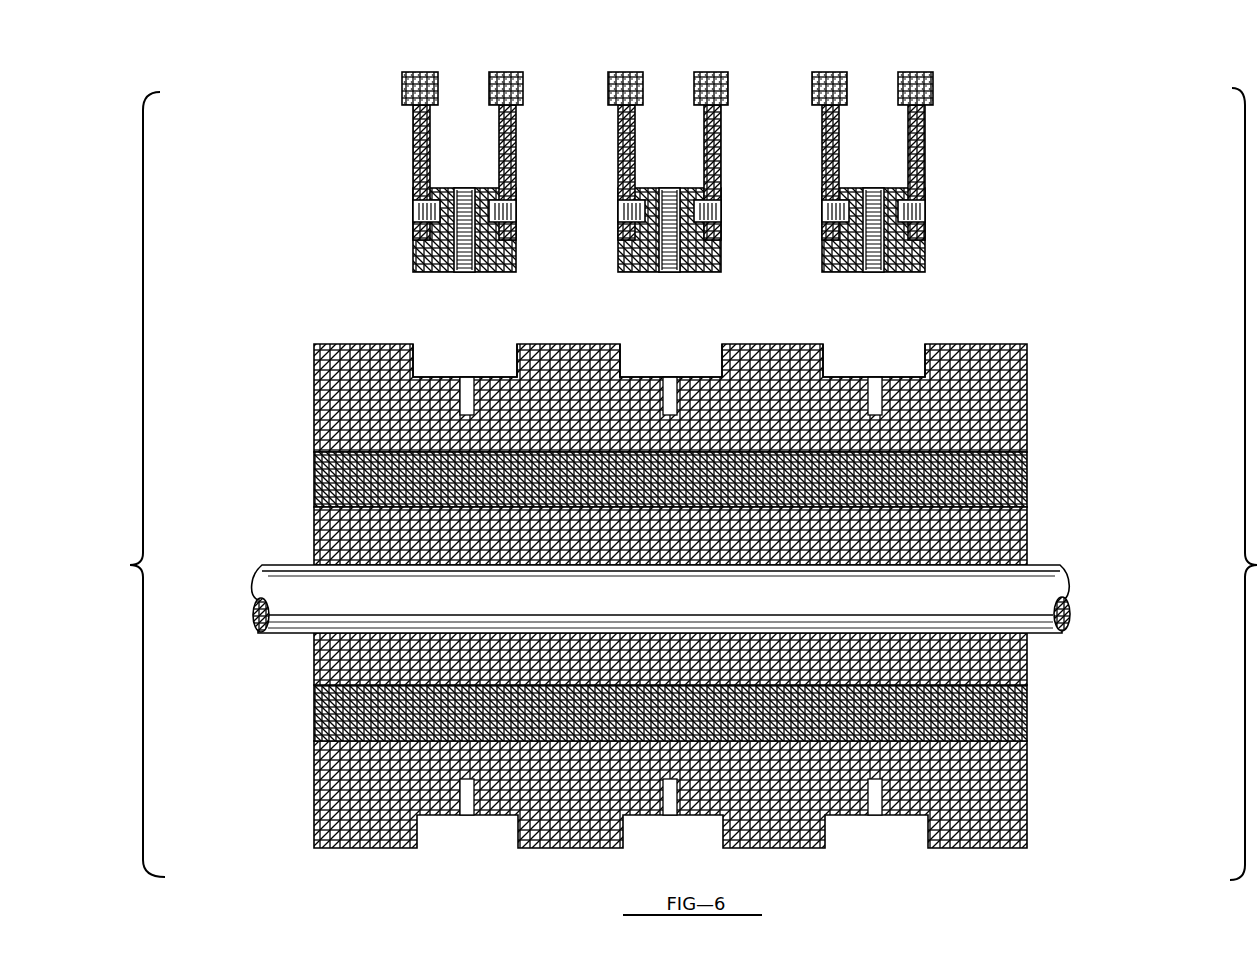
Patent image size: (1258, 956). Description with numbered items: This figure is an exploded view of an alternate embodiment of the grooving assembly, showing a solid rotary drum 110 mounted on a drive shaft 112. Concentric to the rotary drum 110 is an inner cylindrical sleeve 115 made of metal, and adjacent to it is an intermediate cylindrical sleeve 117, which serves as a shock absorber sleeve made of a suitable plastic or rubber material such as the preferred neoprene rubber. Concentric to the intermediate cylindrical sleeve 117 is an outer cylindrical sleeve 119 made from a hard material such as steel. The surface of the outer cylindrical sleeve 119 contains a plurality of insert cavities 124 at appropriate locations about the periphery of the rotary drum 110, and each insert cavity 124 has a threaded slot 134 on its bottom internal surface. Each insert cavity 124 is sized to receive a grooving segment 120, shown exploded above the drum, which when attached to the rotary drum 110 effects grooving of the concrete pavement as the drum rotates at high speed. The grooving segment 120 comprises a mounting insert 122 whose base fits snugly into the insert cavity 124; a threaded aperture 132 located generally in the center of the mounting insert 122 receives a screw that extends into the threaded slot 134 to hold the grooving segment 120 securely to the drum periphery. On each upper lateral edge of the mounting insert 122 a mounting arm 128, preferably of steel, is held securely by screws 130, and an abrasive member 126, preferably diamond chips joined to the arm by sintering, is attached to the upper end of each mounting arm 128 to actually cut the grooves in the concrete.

The solid rotary drum 110 is at (713, 567).
The drive shaft 112 is at (1048, 585).
The inner cylindrical sleeve 115 is at (1000, 540).
The intermediate cylindrical sleeve 117 is at (1010, 475).
The outer cylindrical sleeve 119 is at (1015, 392).
The grooving segment 120 is at (667, 189).
The mounting insert 122 is at (500, 258).
The insert cavity 124 is at (517, 358).
The abrasive member 126 is at (410, 92).
The mounting arm 128 is at (415, 155).
The screw 130 is at (415, 218).
The threaded aperture 132 is at (465, 272).
The threaded slot 134 is at (466, 392).